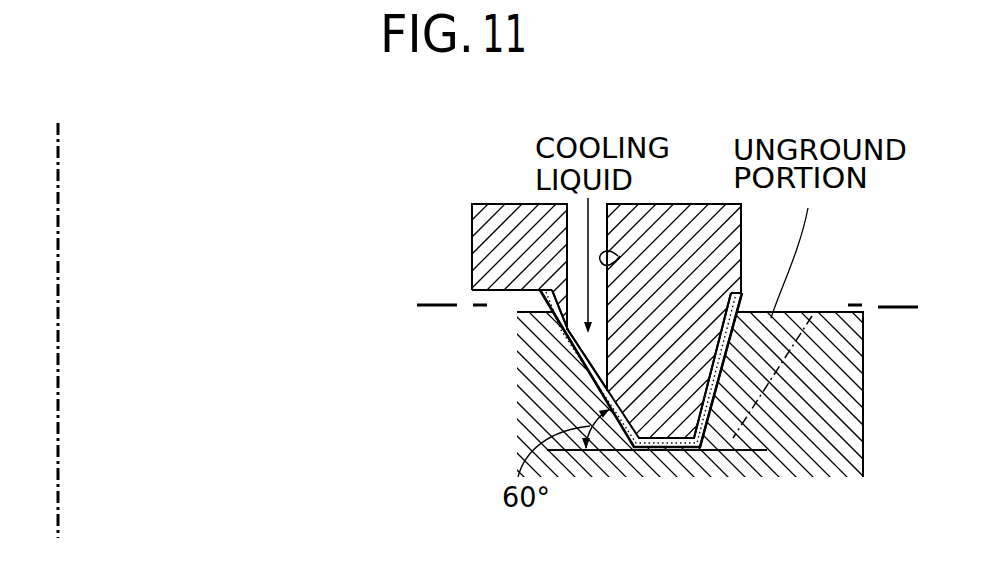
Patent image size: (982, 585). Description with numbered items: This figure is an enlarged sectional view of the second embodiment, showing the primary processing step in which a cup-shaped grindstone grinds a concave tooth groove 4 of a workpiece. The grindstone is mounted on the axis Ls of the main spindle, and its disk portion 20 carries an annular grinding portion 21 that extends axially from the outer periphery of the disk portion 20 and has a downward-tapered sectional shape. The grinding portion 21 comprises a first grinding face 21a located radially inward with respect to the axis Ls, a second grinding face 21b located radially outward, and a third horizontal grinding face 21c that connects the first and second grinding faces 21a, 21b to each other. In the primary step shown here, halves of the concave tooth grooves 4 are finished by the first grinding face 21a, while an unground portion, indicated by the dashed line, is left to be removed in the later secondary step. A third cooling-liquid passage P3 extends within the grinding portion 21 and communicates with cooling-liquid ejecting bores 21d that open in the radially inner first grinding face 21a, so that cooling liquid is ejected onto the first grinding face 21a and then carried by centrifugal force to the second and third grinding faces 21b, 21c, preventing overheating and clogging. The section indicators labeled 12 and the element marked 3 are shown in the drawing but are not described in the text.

The disk portion 20 is at (522, 198).
The concave tooth groove 4 is at (720, 322).
The base workpiece body 3 is at (798, 304).
The grinding portion 21 is at (657, 457).
The first grinding face 21a is at (562, 333).
The second grinding face 21b is at (725, 355).
The third horizontal grinding face 21c is at (675, 450).
The cooling-liquid ejecting bore 21d is at (601, 352).
The third cooling-liquid passage P3 is at (618, 256).
The axis of the main spindle Ls is at (62, 267).
The section line of FIG. 12 is at (907, 295).